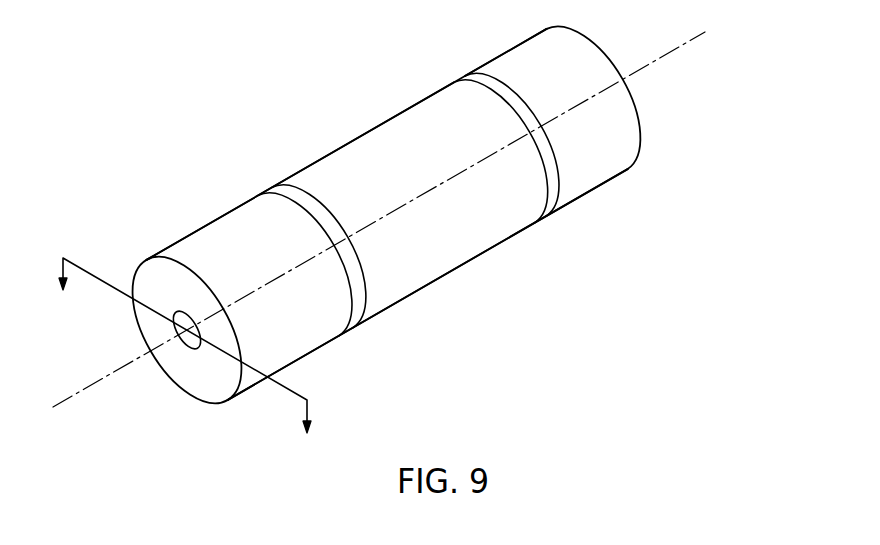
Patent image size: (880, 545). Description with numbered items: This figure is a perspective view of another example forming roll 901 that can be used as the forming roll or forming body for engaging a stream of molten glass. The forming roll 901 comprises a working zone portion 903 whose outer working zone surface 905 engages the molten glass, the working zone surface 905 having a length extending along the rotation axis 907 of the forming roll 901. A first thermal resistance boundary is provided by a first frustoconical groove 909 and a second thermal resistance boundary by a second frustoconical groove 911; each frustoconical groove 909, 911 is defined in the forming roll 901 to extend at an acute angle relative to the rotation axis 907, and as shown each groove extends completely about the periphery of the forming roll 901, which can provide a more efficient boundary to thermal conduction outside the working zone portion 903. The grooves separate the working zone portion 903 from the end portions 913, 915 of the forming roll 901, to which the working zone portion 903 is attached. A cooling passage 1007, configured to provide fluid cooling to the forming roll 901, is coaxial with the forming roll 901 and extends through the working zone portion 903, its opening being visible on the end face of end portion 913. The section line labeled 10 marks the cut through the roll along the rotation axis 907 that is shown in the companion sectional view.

The forming roll 901 is at (640, 172).
The working zone portion 903 is at (455, 287).
The working zone surface 905 is at (370, 128).
The rotation axis 907 is at (62, 405).
The first frustoconical groove 909 is at (252, 190).
The second frustoconical groove 911 is at (538, 227).
The end portion 913 is at (212, 405).
The end portion 915 is at (508, 52).
The cooling passage 1007 is at (183, 352).
The section line 10- 10 is at (184, 362).